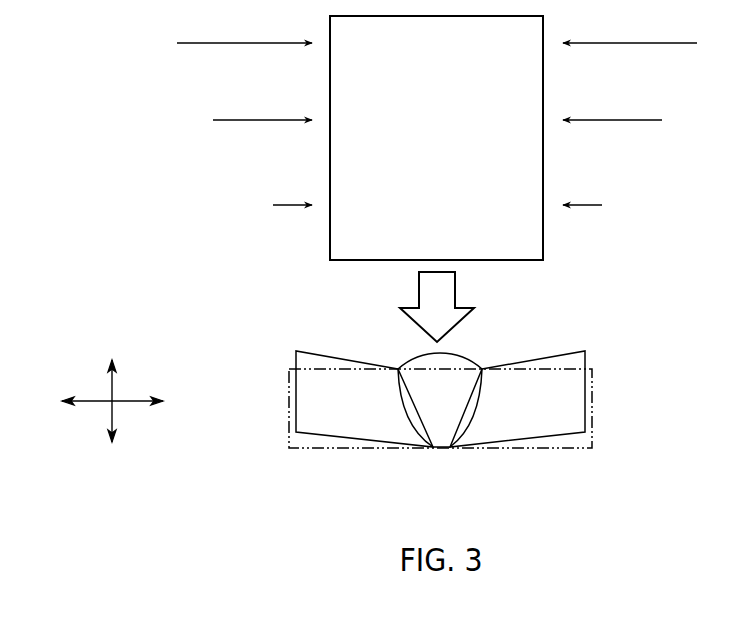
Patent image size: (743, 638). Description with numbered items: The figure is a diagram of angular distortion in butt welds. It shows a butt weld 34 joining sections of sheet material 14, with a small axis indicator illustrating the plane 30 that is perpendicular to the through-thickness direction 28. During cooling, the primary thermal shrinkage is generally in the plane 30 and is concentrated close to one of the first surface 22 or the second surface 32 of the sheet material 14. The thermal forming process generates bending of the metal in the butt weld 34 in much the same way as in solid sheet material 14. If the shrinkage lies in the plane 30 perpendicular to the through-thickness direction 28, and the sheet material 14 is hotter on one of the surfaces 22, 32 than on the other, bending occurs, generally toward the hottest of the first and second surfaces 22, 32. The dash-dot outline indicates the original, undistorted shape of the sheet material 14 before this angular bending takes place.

The sheet material 14 is at (307, 408).
The first surface 22 is at (567, 353).
The through-thickness direction 28 is at (115, 412).
The plane 30 is at (125, 401).
The second surface 32 is at (563, 434).
The butt weld 34 is at (457, 353).